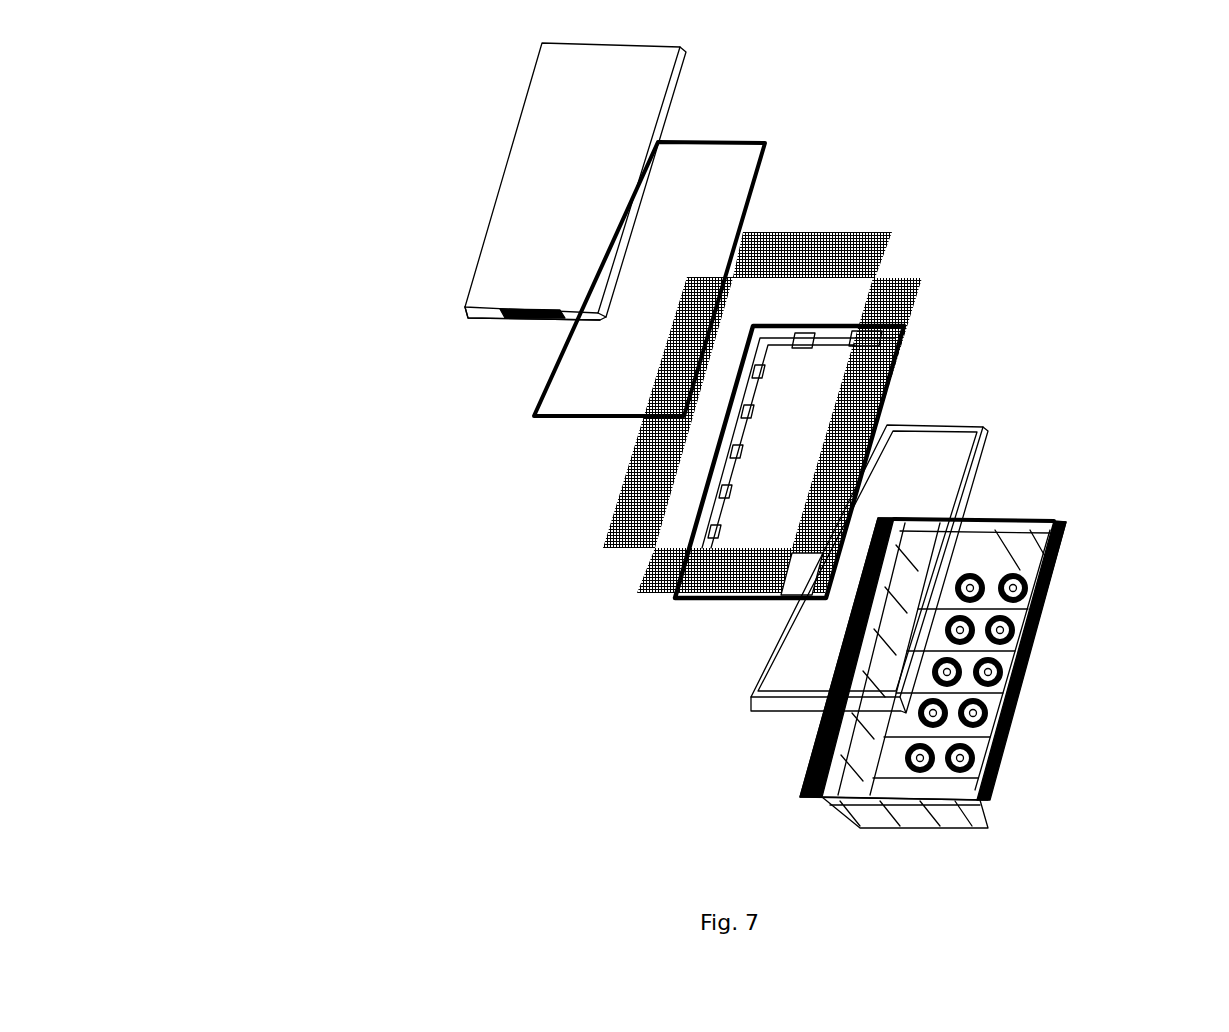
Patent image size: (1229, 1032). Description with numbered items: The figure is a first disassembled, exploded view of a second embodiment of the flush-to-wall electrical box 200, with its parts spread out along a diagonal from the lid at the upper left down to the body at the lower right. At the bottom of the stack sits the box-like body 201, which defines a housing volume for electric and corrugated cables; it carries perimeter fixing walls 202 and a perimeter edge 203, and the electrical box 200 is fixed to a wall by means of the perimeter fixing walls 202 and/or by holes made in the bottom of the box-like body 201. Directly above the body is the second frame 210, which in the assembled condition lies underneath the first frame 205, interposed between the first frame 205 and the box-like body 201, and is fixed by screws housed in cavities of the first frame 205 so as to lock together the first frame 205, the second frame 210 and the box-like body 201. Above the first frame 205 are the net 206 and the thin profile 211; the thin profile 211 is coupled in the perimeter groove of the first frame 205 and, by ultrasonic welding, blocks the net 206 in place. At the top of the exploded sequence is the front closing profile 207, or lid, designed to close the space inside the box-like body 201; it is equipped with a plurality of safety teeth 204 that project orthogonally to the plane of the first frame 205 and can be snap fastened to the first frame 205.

The flush-to-wall electrical box 200 is at (256, 142).
The box-like body 201 is at (1068, 572).
The perimeter fixing walls 202 is at (992, 527).
The perimeter edge 203 is at (808, 746).
The safety teeth 204 is at (637, 44).
The first frame 205 is at (903, 363).
The net 206 is at (605, 515).
The front closing profile 207 is at (483, 277).
The second frame 210 is at (950, 425).
The thin profile 211 is at (760, 180).